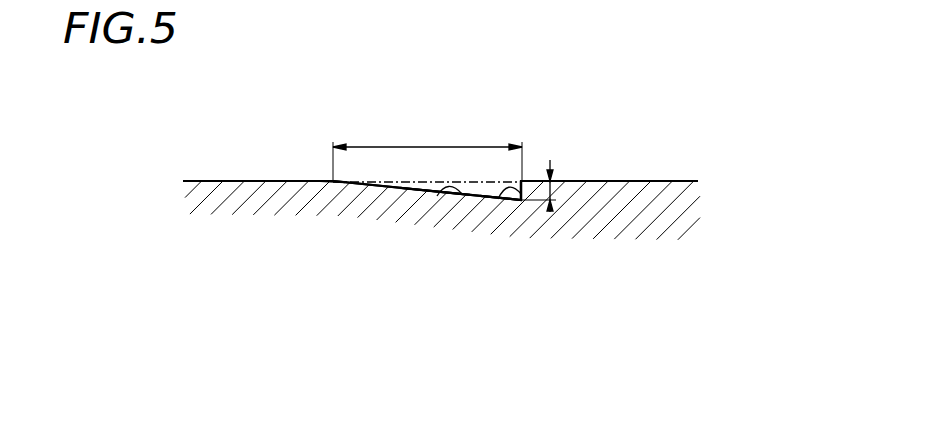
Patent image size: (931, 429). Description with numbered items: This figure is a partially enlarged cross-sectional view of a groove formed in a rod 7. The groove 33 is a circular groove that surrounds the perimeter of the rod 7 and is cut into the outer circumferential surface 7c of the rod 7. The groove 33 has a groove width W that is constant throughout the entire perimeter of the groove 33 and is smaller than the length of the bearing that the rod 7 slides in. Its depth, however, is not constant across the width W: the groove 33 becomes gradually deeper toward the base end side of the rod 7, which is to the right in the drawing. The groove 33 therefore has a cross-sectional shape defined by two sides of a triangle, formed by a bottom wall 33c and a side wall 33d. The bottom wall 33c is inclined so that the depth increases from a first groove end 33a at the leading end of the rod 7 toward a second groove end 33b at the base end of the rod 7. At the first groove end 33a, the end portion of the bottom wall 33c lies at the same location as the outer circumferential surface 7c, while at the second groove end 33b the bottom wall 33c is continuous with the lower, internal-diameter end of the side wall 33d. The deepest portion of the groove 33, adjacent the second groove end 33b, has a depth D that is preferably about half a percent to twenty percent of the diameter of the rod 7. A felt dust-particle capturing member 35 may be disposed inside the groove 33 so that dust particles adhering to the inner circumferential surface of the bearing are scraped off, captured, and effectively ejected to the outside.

The rod 7 is at (638, 200).
The outer circumferential surface 7c is at (233, 181).
The groove 33 is at (412, 180).
The first groove end 33a is at (333, 181).
The second groove end 33b is at (523, 180).
The bottom wall 33c is at (442, 193).
The side wall 33d is at (502, 198).
The dust-particle capturing member 35 is at (483, 195).
The groove width W is at (427, 147).
The depth D is at (558, 181).